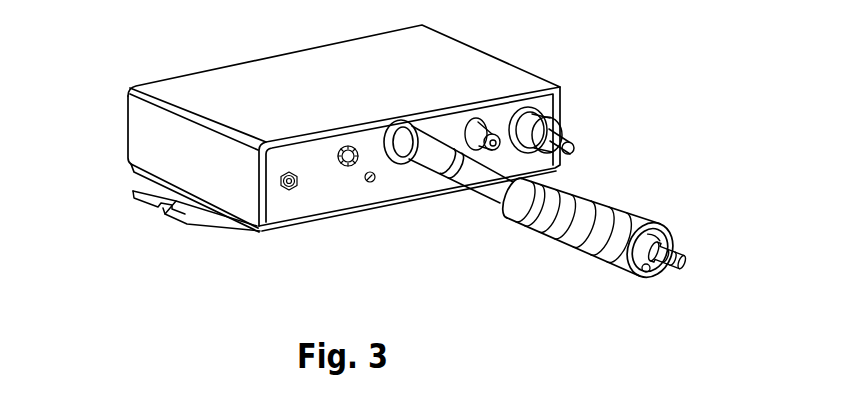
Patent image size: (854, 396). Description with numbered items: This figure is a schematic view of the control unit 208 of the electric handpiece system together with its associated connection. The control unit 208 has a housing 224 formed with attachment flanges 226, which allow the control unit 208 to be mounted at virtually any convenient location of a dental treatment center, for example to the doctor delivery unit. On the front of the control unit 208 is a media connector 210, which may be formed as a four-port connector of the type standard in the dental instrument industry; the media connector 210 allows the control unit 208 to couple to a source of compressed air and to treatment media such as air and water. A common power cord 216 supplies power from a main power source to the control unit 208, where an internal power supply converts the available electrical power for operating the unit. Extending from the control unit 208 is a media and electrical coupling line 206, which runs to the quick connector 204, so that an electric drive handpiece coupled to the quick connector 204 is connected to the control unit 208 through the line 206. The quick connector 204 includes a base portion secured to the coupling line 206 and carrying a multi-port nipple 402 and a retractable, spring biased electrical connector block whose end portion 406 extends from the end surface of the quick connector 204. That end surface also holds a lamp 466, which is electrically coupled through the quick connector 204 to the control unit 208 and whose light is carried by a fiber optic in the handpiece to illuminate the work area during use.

The control unit 208 is at (232, 80).
The housing 224 is at (141, 143).
The attachment flanges 226 is at (185, 208).
The media and electrical coupling line 206 is at (428, 157).
The media connector 210 is at (540, 112).
The power cord 216 is at (497, 150).
The quick connector 204 is at (637, 215).
The multi-port nipple 402 is at (684, 260).
The end portion 406 is at (633, 245).
The lamp 466 is at (646, 273).